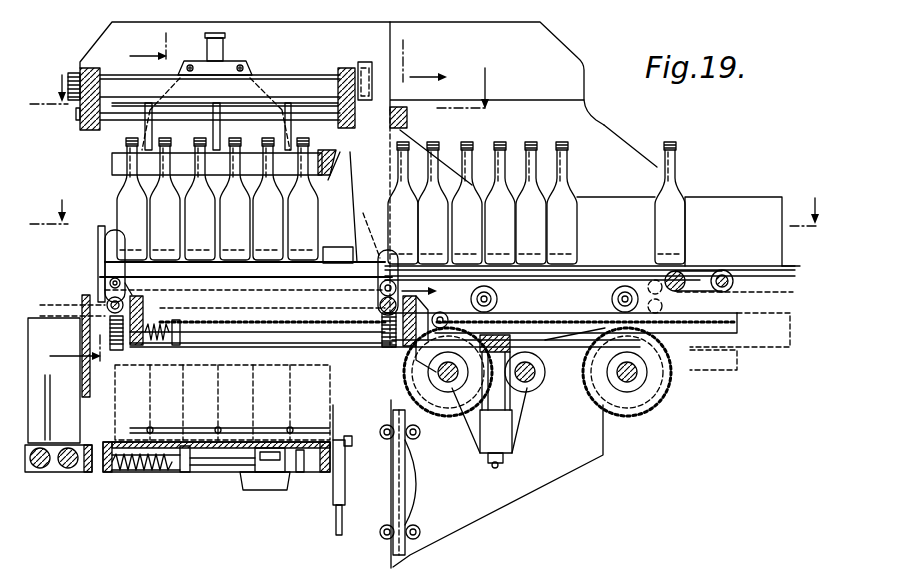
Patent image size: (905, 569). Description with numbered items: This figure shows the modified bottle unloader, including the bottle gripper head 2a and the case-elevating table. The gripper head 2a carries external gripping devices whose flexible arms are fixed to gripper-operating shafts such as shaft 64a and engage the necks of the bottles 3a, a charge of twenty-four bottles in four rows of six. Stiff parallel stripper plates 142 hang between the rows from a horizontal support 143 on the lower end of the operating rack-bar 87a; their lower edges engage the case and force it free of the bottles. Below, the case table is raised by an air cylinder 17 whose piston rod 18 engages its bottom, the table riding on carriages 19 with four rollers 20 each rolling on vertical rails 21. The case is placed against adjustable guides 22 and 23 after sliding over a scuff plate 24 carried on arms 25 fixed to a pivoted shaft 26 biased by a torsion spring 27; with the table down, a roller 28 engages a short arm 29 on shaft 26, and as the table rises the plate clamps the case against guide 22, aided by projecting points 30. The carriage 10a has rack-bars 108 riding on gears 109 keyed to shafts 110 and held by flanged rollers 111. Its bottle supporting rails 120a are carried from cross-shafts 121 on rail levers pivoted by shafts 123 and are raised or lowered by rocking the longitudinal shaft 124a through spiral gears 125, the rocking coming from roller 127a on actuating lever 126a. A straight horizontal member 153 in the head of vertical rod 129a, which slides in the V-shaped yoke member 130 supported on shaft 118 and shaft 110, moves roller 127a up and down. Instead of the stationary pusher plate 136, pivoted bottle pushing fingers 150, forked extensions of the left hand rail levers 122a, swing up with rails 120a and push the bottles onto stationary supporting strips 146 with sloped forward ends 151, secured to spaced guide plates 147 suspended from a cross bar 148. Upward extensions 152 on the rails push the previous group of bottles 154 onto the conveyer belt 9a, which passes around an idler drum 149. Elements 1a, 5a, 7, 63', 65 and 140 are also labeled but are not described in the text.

The machine frame 1a is at (606, 136).
The gripper-head 2a is at (282, 78).
The bottles 3a is at (336, 192).
The base frame 5a is at (106, 474).
The support base 7 is at (53, 472).
The conveyer belt 9a is at (786, 266).
The bottle removing carriage 10a is at (284, 347).
The air cylinder 17 is at (262, 490).
The piston rod 18 is at (258, 468).
The carriages 19 is at (405, 502).
The rollers 20 is at (412, 436).
The vertical bars or rails 21 is at (406, 472).
The adjustable guide 22 is at (422, 196).
The adjustable guide 23 is at (332, 420).
The scuff plate 24 is at (230, 428).
The spaced arms 25 is at (184, 474).
The pivoted shaft 26 is at (222, 467).
The torsion spring 27 is at (132, 474).
The roller 28 is at (341, 486).
The short arm 29 is at (350, 438).
The projecting points 30 is at (149, 430).
The gear 63' is at (70, 84).
The intermediate shaft 64a is at (150, 85).
The bearing 65 is at (365, 66).
The operating rack-bar 87a is at (207, 52).
The rack-bar 108 is at (604, 336).
The gears 109 is at (420, 414).
The parallel shafts 110 is at (445, 378).
The flanged rollers 111 is at (486, 284).
The shaft 118 is at (532, 378).
The bottle supporting rails 120a is at (110, 258).
The cross-shafts 121 is at (107, 305).
The left hand bottle rail levers 122a is at (106, 286).
The shafts 123 is at (111, 282).
The longitudinal shaft 124a is at (313, 344).
The spiral gears 125 is at (122, 346).
The actuating lever 126a is at (458, 326).
The roller 127a is at (418, 330).
The vertical rod 129a is at (503, 462).
The V-shaped yoke member 130 is at (512, 440).
The stationary pusher plate 136 is at (82, 372).
The block 140 is at (332, 246).
The stripper plates 142 is at (140, 182).
The horizontal support 143 is at (220, 66).
The stationary supporting strips 146 is at (612, 266).
The guide plates 147 is at (425, 142).
The cross bar 148 is at (400, 107).
The idler roller or drum 149 is at (700, 274).
The bottle pushing fingers 150 is at (140, 214).
The sloped forward ends 151 is at (372, 250).
The upward extensions 152 is at (392, 252).
The straight horizontal member 153 is at (546, 330).
The group of bottles 154 is at (548, 145).